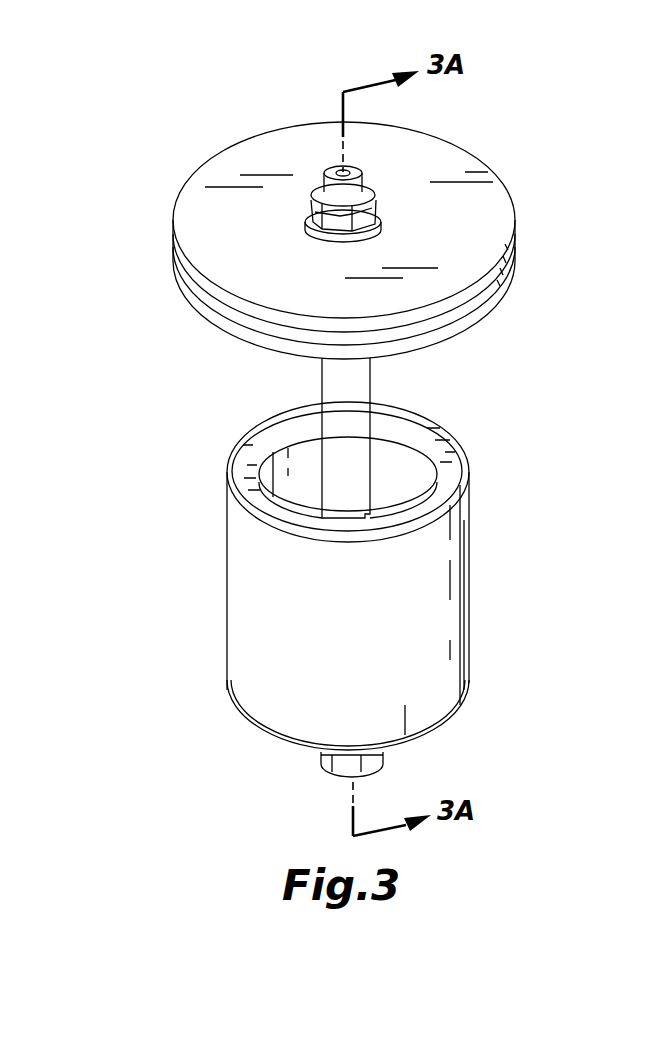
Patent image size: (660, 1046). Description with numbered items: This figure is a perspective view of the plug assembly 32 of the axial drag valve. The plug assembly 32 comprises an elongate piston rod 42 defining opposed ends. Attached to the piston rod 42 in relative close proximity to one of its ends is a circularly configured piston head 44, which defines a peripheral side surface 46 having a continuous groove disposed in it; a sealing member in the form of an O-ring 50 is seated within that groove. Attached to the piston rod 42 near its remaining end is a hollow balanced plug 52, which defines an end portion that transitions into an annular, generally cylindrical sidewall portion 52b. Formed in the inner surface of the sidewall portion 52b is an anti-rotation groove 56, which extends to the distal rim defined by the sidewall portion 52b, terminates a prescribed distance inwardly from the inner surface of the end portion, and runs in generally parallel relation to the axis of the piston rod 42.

The plug assembly 32 is at (212, 651).
The piston rod 42 is at (322, 372).
The piston head 44 is at (237, 282).
The peripheral side surface 46 is at (494, 291).
The O-ring 50 is at (246, 322).
The balanced plug 52 is at (480, 578).
The sidewall portion 52b is at (240, 568).
The anti-rotation groove 56 is at (376, 507).